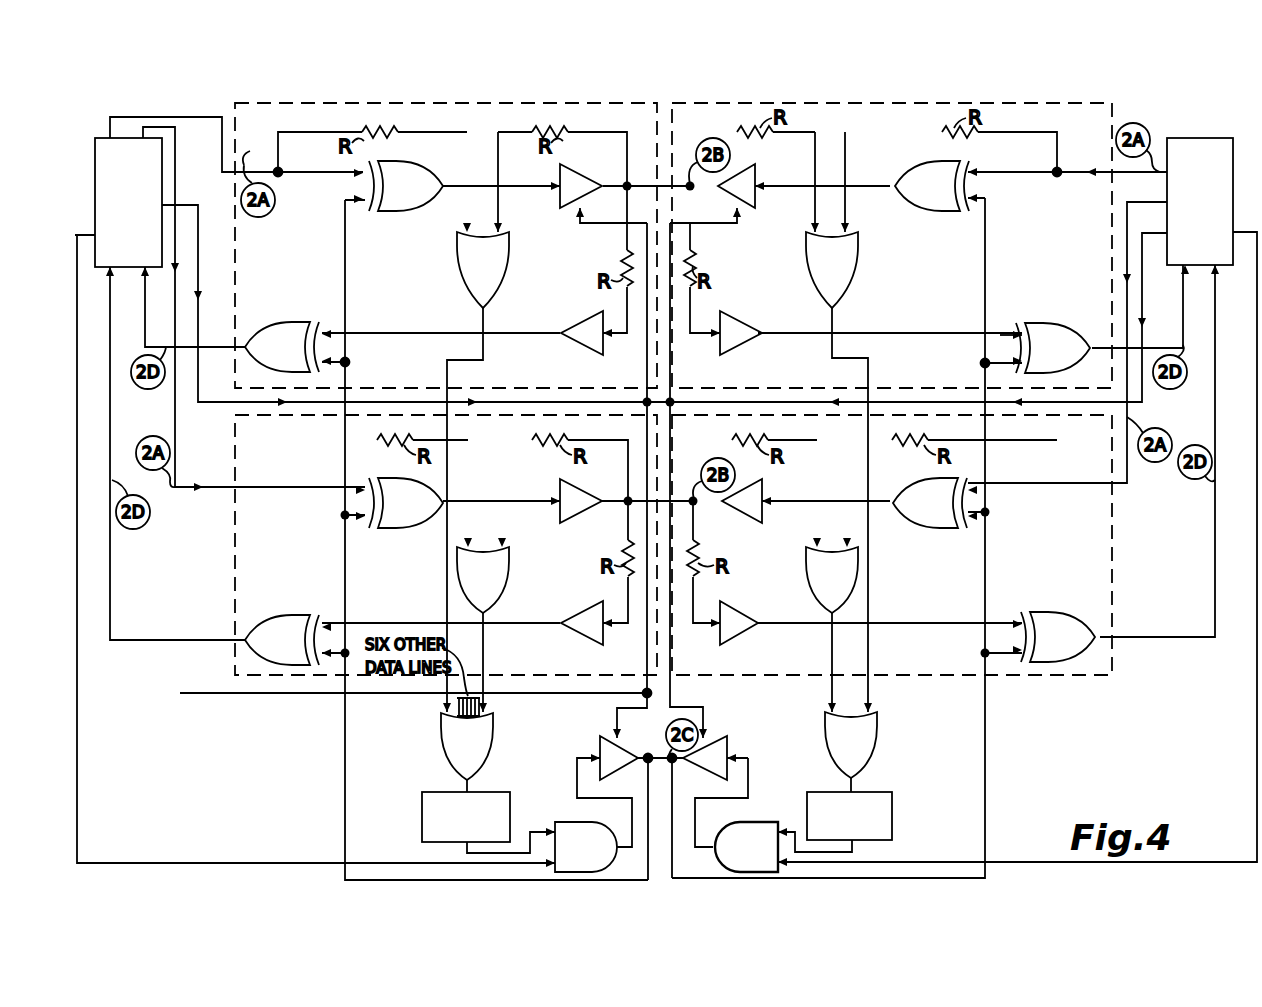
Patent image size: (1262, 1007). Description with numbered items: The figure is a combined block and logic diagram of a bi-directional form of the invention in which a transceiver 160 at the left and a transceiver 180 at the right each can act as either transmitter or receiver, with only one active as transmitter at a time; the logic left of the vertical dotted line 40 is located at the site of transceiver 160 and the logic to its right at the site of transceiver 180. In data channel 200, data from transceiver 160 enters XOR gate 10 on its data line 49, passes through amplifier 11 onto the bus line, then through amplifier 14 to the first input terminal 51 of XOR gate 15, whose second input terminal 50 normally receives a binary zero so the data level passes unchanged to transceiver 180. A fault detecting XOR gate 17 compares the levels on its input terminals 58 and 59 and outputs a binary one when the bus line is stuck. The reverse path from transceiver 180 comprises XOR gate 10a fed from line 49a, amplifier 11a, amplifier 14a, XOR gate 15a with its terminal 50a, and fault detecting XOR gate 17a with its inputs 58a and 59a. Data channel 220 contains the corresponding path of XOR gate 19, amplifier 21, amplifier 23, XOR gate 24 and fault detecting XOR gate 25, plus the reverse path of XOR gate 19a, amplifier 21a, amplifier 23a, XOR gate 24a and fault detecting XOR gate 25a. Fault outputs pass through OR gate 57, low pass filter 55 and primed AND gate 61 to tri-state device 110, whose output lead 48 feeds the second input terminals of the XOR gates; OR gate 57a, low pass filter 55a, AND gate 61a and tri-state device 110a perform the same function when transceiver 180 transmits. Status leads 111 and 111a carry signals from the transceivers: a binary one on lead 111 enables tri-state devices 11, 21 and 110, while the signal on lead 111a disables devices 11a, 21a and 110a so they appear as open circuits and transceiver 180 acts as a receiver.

The XOR gate 10 is at (422, 161).
The XOR gate 10a is at (911, 160).
The amplifier 11 is at (569, 163).
The amplifier 11a is at (758, 162).
The amplifier 14 is at (739, 306).
The amplifier 14a is at (556, 306).
The XOR gate 15 is at (1072, 320).
The XOR gate 15a is at (300, 320).
The fault detecting XOR gate 17 is at (510, 272).
The fault detecting XOR gate 17a is at (860, 272).
The XOR gate 19 is at (420, 534).
The XOR gate 19a is at (928, 535).
The amplifier 21 is at (584, 521).
The amplifier 21a is at (739, 521).
The amplifier 23 is at (730, 644).
The amplifier 23a is at (588, 642).
The XOR gate 24 is at (1064, 611).
The XOR gate 24a is at (302, 610).
The fault detecting XOR gate 25 is at (507, 577).
The fault detecting XOR gate 25a is at (809, 577).
The vertical dotted line 40 is at (650, 704).
The output lead 48 is at (645, 763).
The data input line 49 is at (243, 150).
The data input line 49a is at (1058, 175).
The second input terminal 50 is at (983, 362).
The received data line node 50a is at (347, 362).
The first input terminal 51 is at (1002, 332).
The low pass filter 55 is at (422, 816).
The low pass filter 55a is at (892, 822).
The OR gate 57 is at (492, 746).
The OR gate 57a is at (878, 746).
The input terminal 58 is at (504, 203).
The OR gate input line 58a is at (808, 196).
The input terminal 59 is at (462, 203).
The OR gate input line 59a is at (848, 196).
The AND gate 61 is at (571, 822).
The AND gate 61a is at (750, 822).
The tri-state device 110 is at (602, 736).
The tri-state device 110a is at (734, 748).
The lead 111 is at (644, 364).
The lead 111a is at (684, 364).
The transceiver 160 is at (107, 136).
The transceiver 180 is at (1205, 138).
The data channel 200 is at (448, 110).
The data channel 220 is at (278, 422).